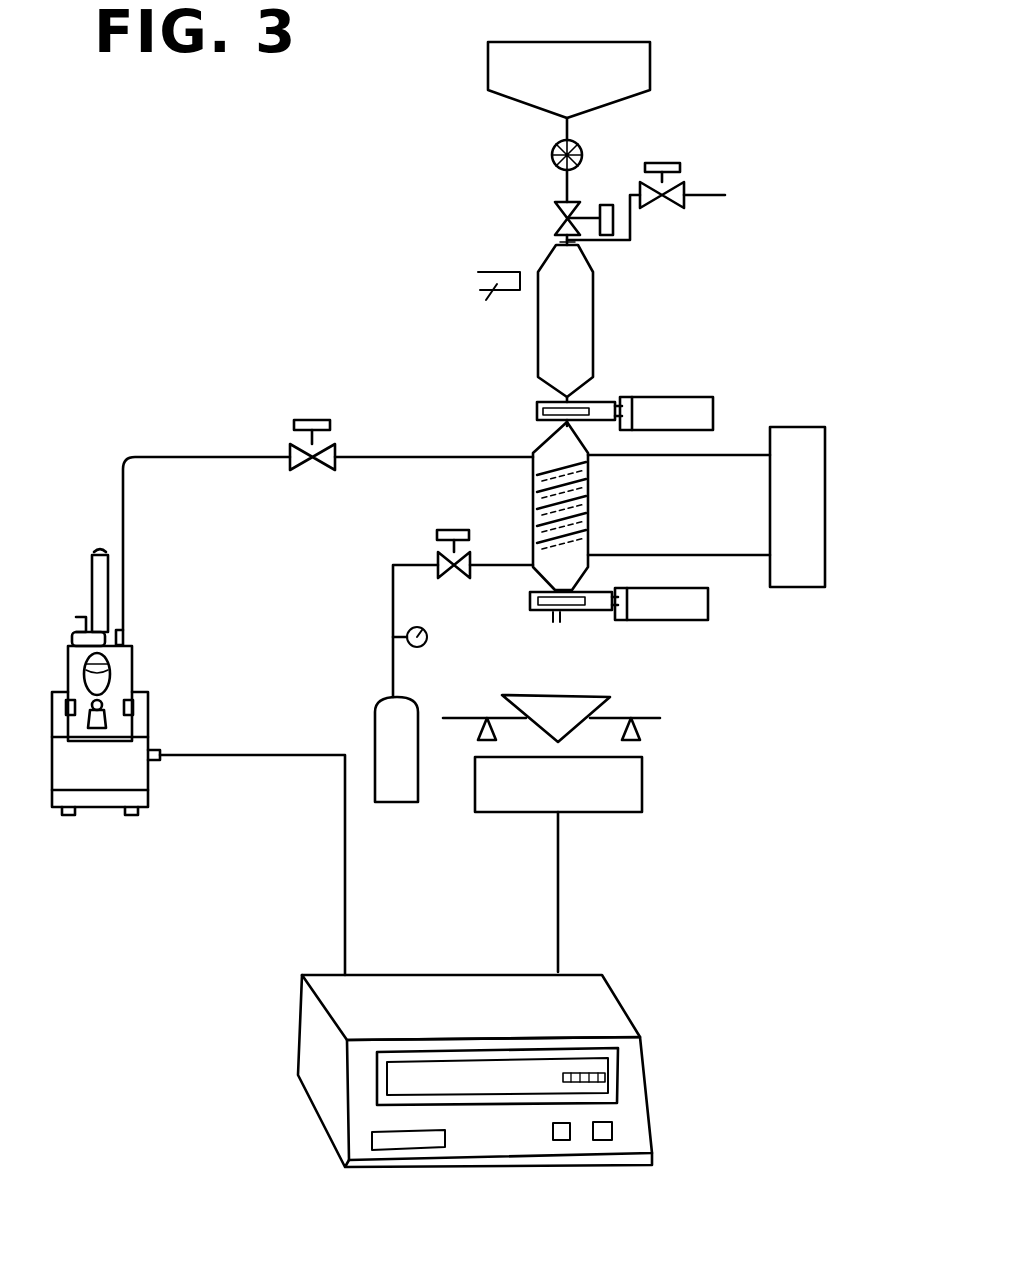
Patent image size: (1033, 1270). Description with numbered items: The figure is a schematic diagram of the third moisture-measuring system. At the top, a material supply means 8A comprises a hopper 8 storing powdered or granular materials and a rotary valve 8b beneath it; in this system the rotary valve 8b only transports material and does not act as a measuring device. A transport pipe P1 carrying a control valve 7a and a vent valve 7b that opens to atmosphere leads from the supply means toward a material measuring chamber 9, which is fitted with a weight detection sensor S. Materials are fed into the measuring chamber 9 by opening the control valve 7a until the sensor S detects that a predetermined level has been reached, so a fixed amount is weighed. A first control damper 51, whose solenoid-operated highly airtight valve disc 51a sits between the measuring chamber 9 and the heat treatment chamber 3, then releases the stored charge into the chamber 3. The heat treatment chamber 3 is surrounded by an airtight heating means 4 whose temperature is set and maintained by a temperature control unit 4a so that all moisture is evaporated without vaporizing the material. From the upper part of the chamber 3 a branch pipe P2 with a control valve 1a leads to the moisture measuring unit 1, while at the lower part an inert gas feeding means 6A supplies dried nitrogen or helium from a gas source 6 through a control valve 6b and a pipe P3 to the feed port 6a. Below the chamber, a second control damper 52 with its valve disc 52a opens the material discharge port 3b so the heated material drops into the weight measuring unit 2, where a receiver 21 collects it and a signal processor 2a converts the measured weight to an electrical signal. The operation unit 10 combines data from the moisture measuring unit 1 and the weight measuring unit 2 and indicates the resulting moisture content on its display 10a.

The material supply means 8A is at (492, 30).
The hopper 8 is at (640, 82).
The rotary valve 8b is at (552, 156).
The control valve 7a is at (578, 206).
The vent valve 7b is at (672, 196).
The transport pipe P1 is at (560, 242).
The weight detection sensor S is at (498, 306).
The material measuring chamber 9 is at (594, 322).
The first control damper 51 is at (672, 408).
The valve disc 51a is at (537, 411).
The heat treatment chamber 3 is at (583, 506).
The heating means 4 is at (586, 480).
The material discharge port 3b is at (564, 622).
The valve disc 52a is at (540, 611).
The second control damper 52 is at (664, 610).
The temperature control unit 4a is at (825, 508).
The branch pipe P2 is at (390, 457).
The control valve 1a is at (290, 452).
The inert gas feeding means 6A is at (378, 585).
The pipe P3 is at (393, 563).
The control valve 6b is at (447, 532).
The inert gas feed port 6a is at (514, 580).
The gas source 6 is at (385, 716).
The moisture measuring unit 1 is at (125, 677).
The weight measuring unit 2 is at (588, 739).
The receiver 21 is at (568, 708).
The signal processor 2a is at (622, 797).
The operation unit 10 is at (446, 985).
The display 10a is at (592, 1078).